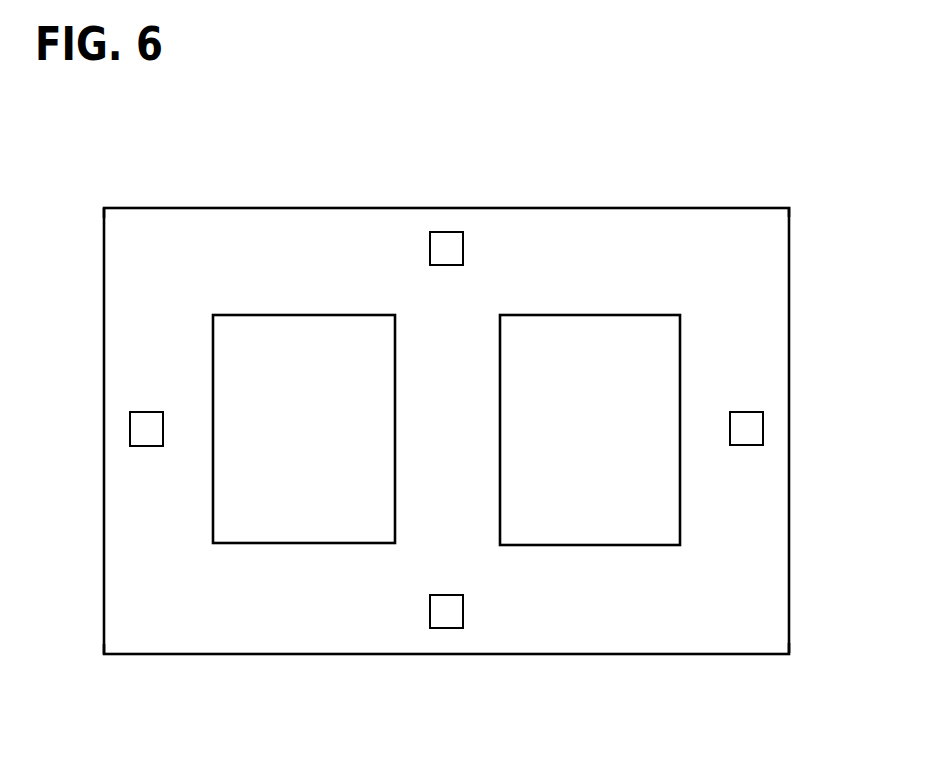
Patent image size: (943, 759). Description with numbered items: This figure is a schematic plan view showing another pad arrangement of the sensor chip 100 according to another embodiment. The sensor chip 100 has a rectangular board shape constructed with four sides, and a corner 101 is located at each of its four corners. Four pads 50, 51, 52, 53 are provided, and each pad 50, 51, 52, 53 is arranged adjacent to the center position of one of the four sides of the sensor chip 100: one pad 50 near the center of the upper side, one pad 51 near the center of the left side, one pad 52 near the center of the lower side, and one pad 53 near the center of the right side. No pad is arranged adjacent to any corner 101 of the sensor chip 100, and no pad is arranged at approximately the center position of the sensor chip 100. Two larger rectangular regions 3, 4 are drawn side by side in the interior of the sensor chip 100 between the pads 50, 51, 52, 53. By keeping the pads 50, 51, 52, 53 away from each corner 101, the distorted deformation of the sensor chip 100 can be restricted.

The sensor chip 100 is at (722, 206).
The corner 101 is at (104, 208).
The first element region 3 is at (314, 439).
The second element region 4 is at (605, 439).
The pad 50 is at (448, 240).
The pad 51 is at (142, 433).
The pad 52 is at (447, 618).
The pad 53 is at (752, 430).